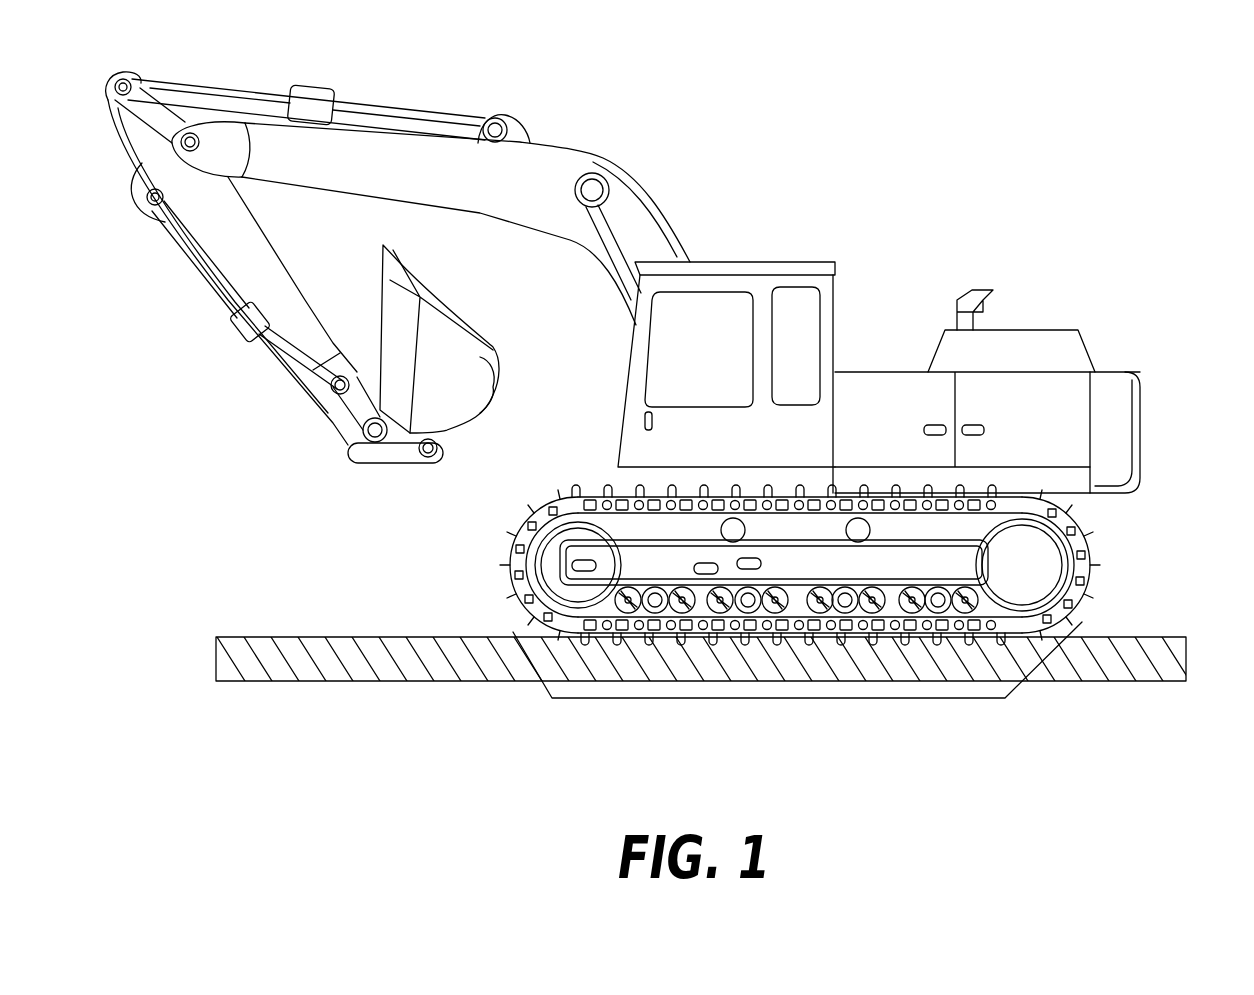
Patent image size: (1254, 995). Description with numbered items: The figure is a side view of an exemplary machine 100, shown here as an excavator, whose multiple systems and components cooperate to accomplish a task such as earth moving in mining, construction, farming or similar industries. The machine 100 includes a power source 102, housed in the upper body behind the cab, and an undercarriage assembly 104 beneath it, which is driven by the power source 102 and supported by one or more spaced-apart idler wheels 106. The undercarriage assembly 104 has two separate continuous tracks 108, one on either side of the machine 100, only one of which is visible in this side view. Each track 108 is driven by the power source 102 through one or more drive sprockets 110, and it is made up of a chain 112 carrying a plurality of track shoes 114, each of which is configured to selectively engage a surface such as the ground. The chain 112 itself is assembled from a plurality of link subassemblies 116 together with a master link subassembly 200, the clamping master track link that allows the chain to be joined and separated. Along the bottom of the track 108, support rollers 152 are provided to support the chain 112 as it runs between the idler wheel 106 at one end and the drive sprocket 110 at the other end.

The machine 100 is at (640, 79).
The power source 102 is at (1068, 380).
The undercarriage assembly 104 is at (788, 698).
The idler wheel 106 is at (520, 597).
The track 108 is at (1104, 541).
The drive sprocket 110 is at (1032, 587).
The chain 112 is at (973, 490).
The track shoe 114 is at (702, 484).
The link subassembly 116 is at (907, 633).
The support roller 152 is at (965, 590).
The master link subassembly 200 is at (712, 600).